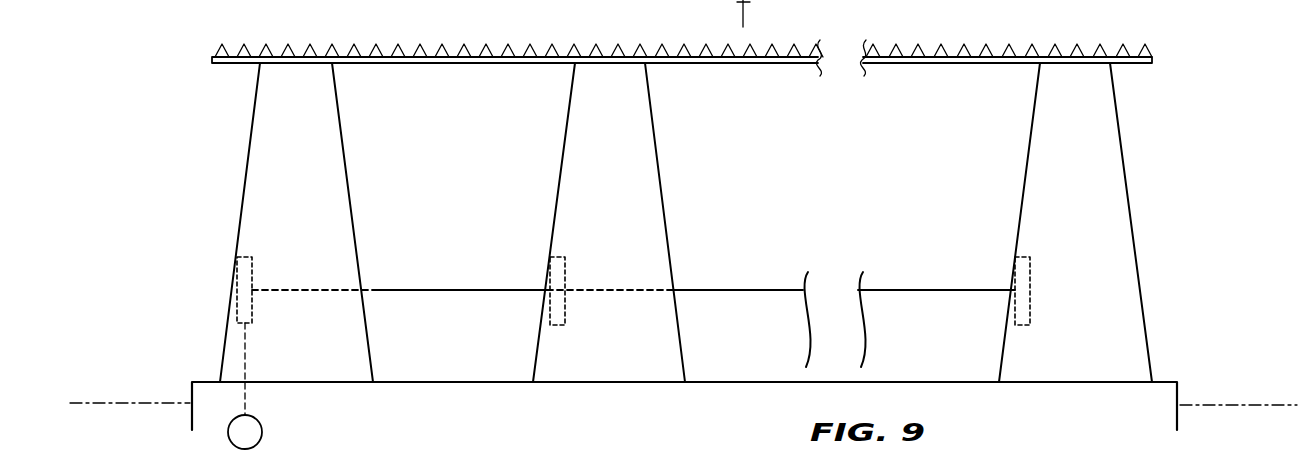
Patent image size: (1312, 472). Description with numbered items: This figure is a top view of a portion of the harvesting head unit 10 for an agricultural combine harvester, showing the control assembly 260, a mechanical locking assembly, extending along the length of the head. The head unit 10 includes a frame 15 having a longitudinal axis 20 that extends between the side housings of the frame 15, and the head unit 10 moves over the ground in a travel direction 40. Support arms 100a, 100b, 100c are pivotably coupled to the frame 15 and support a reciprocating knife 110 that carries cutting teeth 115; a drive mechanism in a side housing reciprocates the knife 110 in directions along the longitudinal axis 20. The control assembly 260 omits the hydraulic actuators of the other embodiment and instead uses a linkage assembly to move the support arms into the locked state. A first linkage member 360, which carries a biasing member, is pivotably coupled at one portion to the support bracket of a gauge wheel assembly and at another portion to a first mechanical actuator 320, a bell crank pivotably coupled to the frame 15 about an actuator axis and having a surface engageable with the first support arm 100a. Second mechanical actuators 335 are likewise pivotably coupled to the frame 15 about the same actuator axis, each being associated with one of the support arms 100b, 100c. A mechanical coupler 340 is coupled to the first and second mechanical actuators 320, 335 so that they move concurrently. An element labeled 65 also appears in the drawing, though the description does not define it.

The harvesting head unit 10 is at (1255, 108).
The frame 15 is at (1177, 393).
The longitudinal axis 20 is at (140, 403).
The travel direction 40 is at (741, 11).
The anchor 65 is at (262, 426).
The first support arm 100a is at (345, 142).
The support arm 100b is at (658, 137).
The support arm 100c is at (1122, 137).
The reciprocating knife 110 is at (1153, 45).
The cutting teeth 115 is at (399, 50).
The control assembly 260 is at (196, 178).
The first mechanical actuator 320 is at (253, 266).
The second mechanical actuators 335 is at (567, 267).
The mechanical coupler 340 is at (435, 290).
The first linkage member 360 is at (248, 345).